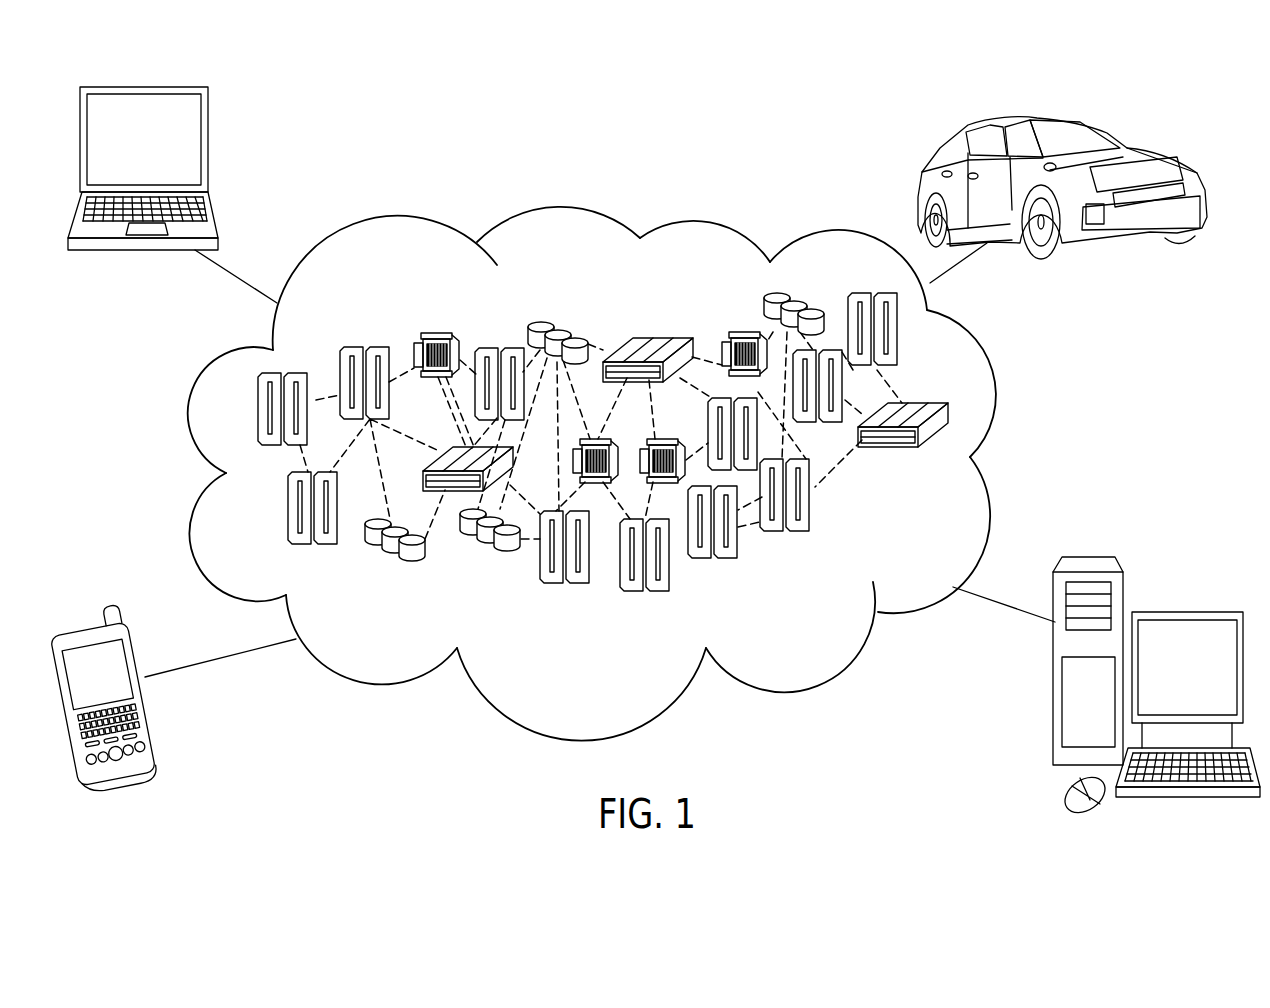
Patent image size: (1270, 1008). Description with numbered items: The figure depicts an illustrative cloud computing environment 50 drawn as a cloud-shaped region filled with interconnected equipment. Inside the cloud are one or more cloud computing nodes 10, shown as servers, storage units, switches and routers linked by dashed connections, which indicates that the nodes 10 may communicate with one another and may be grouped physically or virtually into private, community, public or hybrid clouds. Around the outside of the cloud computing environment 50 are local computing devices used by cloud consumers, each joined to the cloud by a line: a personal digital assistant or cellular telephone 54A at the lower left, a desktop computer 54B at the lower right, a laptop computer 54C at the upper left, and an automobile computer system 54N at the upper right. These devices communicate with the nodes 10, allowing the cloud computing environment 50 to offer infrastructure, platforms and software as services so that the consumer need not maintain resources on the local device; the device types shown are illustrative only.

The cloud computing nodes 10 is at (968, 473).
The cloud computing environment 50 is at (992, 385).
The personal digital assistant or cellular telephone 54A is at (150, 713).
The desktop computer 54B is at (1187, 611).
The laptop computer 54C is at (208, 140).
The automobile computer system 54N is at (918, 182).